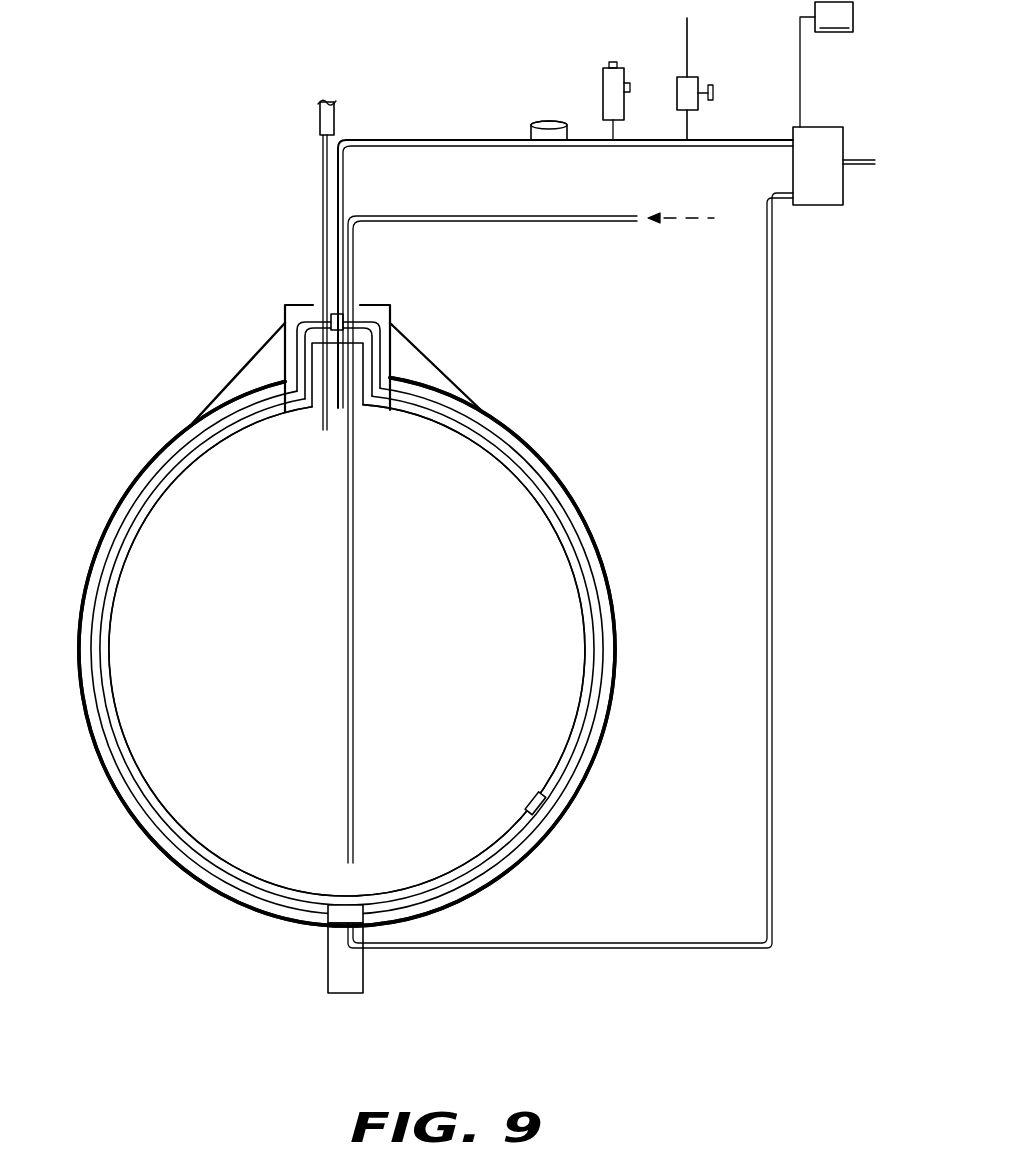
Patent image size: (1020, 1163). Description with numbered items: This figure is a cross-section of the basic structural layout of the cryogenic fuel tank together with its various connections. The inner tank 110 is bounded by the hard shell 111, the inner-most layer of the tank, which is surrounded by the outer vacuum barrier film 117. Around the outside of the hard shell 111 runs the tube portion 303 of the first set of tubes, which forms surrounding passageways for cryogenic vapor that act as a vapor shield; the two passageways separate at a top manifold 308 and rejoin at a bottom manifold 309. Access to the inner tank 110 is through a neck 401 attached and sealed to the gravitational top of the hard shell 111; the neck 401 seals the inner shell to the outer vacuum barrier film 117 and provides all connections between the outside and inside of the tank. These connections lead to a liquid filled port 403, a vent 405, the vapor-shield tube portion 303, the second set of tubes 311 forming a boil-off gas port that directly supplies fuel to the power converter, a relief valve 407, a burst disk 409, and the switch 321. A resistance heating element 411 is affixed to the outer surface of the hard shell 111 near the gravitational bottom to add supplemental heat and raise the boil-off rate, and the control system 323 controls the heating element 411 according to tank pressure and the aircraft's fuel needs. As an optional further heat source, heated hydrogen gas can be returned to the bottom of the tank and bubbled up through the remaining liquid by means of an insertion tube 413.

The inner tank 110 is at (257, 550).
The hard shell 111 is at (124, 742).
The outer vacuum barrier film 117 is at (113, 518).
The tube portion 303 is at (103, 574).
The top manifold 308 is at (342, 318).
The bottom manifold 309 is at (340, 915).
The second set of one or more tubes 311 is at (421, 140).
The switch 321 is at (820, 127).
The control system 323 is at (826, 64).
The neck 401 is at (282, 348).
The liquid filled port 403 is at (320, 120).
The vent 405 is at (688, 48).
The relief valve 407 is at (608, 62).
The burst disk 409 is at (546, 122).
The resistance heating element 411 is at (537, 810).
The insertion tube 413 is at (343, 768).